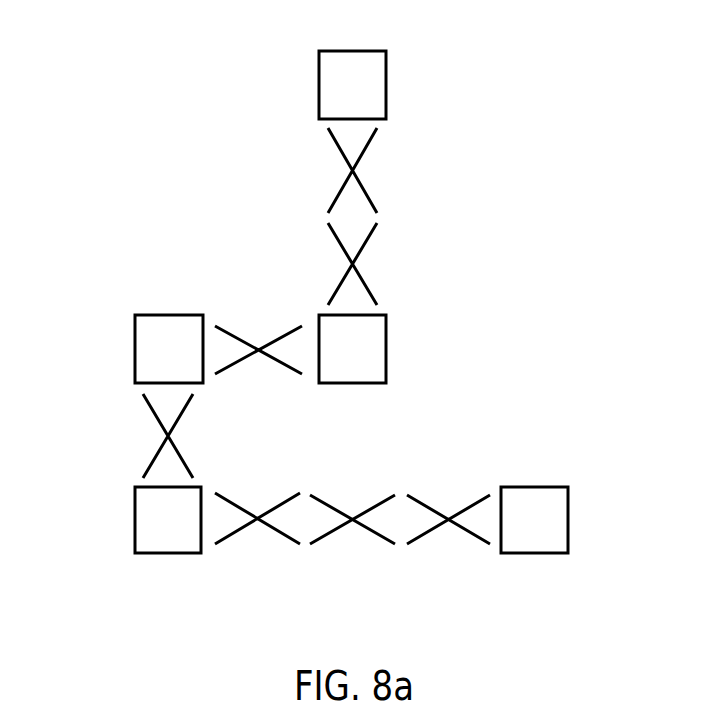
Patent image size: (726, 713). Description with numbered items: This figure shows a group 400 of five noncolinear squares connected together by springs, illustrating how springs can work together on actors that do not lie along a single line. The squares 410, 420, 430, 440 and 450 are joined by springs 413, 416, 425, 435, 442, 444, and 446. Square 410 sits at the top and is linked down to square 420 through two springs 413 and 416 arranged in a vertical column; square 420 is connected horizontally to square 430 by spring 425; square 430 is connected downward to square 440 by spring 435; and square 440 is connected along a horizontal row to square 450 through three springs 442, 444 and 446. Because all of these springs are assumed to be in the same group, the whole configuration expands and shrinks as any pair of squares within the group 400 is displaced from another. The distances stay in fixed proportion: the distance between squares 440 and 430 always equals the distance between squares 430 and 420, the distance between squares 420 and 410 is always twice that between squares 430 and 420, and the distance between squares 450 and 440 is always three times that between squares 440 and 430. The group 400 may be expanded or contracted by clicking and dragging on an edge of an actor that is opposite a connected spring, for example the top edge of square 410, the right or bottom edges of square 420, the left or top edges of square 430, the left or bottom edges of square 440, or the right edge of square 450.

The group 400 is at (543, 58).
The square 410 is at (386, 85).
The spring 413 is at (357, 172).
The spring 416 is at (357, 263).
The square 420 is at (388, 352).
The spring 425 is at (258, 347).
The square 430 is at (130, 348).
The spring 435 is at (160, 436).
The square 440 is at (165, 553).
The spring 442 is at (257, 527).
The spring 444 is at (353, 527).
The spring 446 is at (449, 527).
The square 450 is at (568, 520).